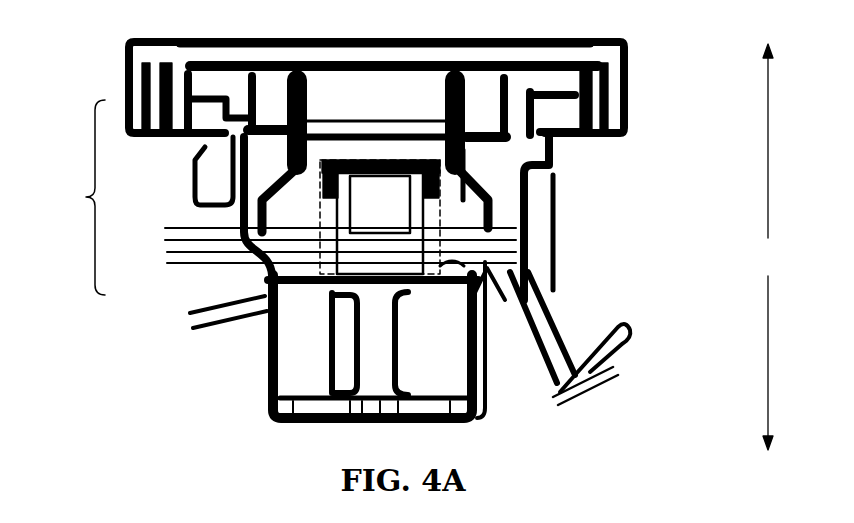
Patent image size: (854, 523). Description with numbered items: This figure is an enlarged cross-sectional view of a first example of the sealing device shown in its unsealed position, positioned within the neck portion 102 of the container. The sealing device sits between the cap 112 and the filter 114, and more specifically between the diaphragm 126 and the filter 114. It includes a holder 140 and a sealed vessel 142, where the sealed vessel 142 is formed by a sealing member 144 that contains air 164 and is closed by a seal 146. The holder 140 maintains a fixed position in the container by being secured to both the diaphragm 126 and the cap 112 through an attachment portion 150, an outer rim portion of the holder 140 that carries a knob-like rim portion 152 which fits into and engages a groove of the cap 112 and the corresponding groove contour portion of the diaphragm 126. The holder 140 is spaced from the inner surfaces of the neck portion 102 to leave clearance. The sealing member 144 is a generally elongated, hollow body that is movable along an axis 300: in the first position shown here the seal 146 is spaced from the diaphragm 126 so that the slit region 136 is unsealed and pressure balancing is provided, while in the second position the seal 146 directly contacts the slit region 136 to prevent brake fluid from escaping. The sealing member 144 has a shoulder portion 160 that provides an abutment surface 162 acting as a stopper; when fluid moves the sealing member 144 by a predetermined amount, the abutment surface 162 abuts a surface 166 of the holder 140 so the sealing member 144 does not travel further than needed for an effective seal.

The neck portion 102 is at (69, 197).
The cap 112 is at (547, 58).
The filter 114 is at (448, 408).
The diaphragm 126 is at (250, 132).
The slit region 136 is at (450, 150).
The holder 140 is at (297, 159).
The sealed vessel 142 is at (327, 277).
The sealing member 144 is at (342, 207).
The seal 146 is at (337, 178).
The attachment portion 150 is at (560, 109).
The knob-like rim portion 152 is at (300, 98).
The shoulder portion 160 is at (447, 272).
The abutment surface 162 is at (322, 258).
The air 164 is at (365, 218).
The surface 166 is at (443, 247).
The axis 300 is at (768, 247).